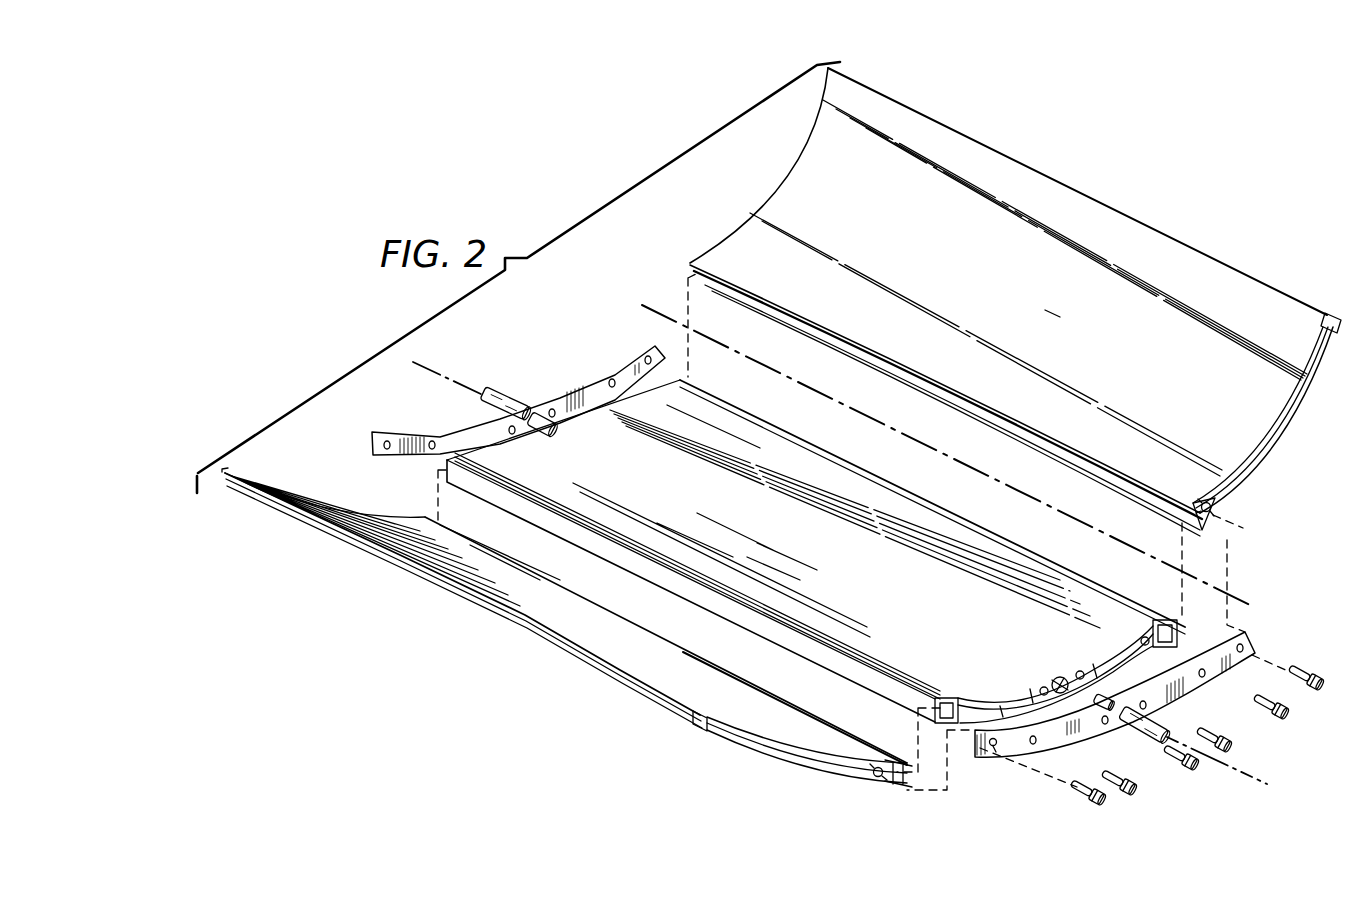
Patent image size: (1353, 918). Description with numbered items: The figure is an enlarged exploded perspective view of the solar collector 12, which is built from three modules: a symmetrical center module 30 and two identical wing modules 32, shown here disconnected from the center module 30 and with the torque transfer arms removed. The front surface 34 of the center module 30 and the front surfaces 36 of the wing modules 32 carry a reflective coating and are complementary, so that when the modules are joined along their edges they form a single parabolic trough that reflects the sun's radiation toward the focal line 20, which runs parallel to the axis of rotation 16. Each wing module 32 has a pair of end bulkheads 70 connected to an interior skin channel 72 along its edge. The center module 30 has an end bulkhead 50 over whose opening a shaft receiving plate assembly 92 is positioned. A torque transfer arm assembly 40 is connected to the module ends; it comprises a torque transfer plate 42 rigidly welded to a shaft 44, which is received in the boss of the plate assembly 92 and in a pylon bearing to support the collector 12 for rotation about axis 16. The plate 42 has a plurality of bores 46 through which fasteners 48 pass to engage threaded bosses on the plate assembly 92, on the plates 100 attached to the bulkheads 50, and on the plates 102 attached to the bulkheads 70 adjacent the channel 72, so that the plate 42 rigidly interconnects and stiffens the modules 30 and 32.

The collector 12 is at (523, 250).
The axis of rotation 16 is at (439, 368).
The focal line 20 is at (660, 312).
The center module 30 is at (767, 520).
The wing module 32 is at (1127, 213).
The front surface of center module 34 is at (927, 592).
The front surface of wing module 36 is at (1050, 307).
The torque transfer arm assembly 40 is at (582, 388).
The torque transfer plate 42 is at (437, 430).
The shaft 44 is at (485, 400).
The bores 46 is at (996, 754).
The fasteners 48 is at (1115, 800).
The end bulkhead 50 is at (1000, 706).
The end bulkhead 70 is at (1255, 460).
The interior skin channel 72 is at (1170, 512).
The shaft receiving plate assembly 92 is at (1062, 676).
The plate 100 is at (962, 685).
The plate 102 is at (1213, 500).